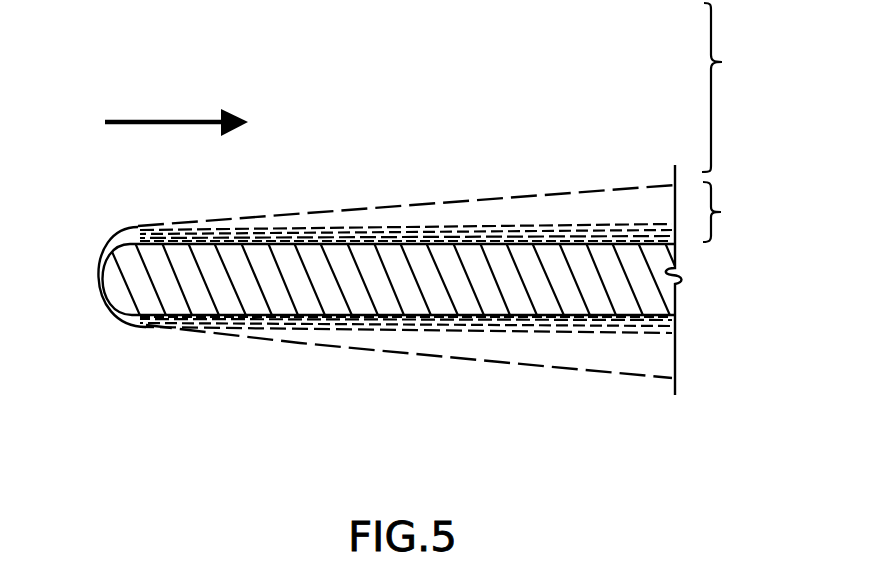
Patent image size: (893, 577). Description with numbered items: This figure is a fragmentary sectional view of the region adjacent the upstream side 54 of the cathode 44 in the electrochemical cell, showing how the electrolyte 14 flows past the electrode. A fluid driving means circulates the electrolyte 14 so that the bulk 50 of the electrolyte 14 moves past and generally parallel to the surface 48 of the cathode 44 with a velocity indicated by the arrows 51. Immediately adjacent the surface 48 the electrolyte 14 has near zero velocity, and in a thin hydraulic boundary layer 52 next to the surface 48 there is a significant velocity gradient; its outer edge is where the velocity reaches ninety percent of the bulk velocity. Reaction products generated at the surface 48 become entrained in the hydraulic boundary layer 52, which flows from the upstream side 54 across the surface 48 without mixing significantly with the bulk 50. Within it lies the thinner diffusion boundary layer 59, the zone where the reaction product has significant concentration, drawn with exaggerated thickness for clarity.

The electrolyte 14 is at (418, 53).
The cathode 44 is at (340, 295).
The surface of cathode 48 is at (443, 232).
The bulk of electrolyte 50 is at (735, 87).
The arrows indicating flow velocity 51 is at (190, 120).
The hydraulic boundary layer 52 is at (733, 212).
The upstream side 54 is at (137, 228).
The diffusion boundary layer 59 is at (644, 235).